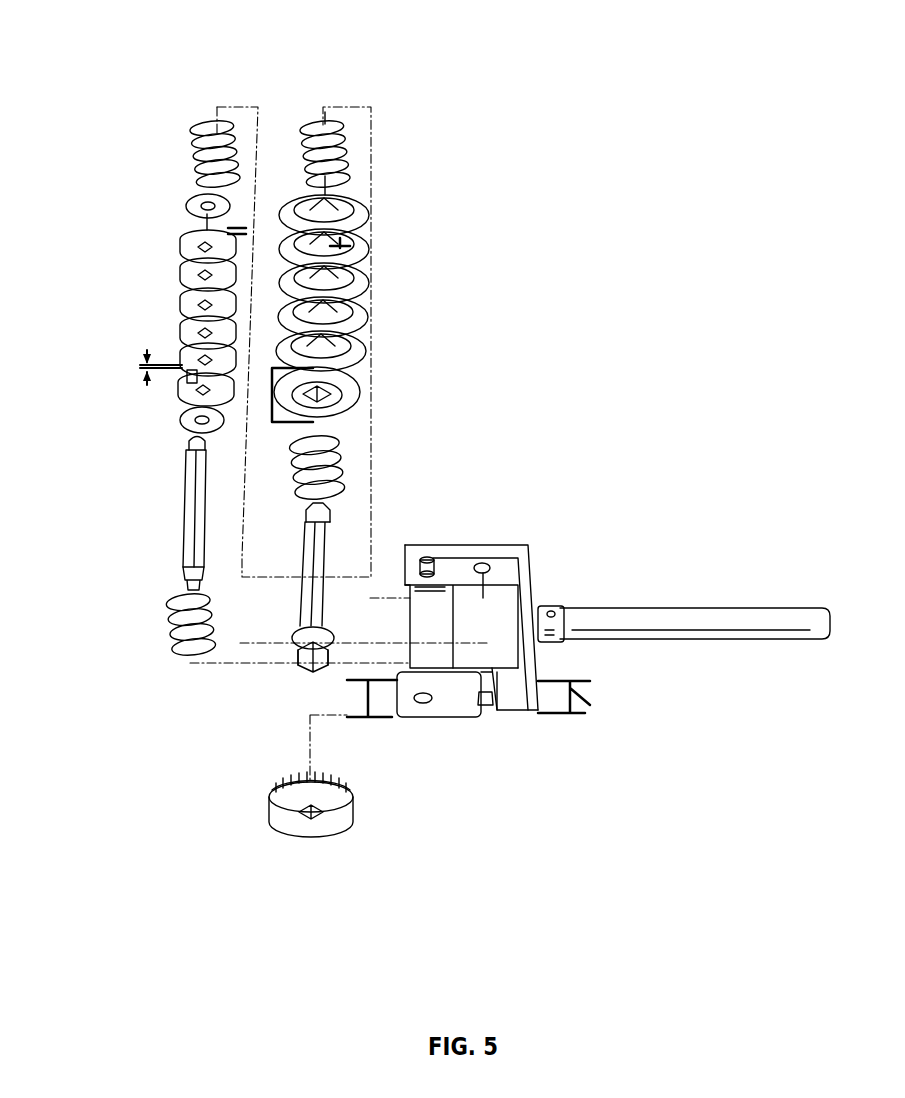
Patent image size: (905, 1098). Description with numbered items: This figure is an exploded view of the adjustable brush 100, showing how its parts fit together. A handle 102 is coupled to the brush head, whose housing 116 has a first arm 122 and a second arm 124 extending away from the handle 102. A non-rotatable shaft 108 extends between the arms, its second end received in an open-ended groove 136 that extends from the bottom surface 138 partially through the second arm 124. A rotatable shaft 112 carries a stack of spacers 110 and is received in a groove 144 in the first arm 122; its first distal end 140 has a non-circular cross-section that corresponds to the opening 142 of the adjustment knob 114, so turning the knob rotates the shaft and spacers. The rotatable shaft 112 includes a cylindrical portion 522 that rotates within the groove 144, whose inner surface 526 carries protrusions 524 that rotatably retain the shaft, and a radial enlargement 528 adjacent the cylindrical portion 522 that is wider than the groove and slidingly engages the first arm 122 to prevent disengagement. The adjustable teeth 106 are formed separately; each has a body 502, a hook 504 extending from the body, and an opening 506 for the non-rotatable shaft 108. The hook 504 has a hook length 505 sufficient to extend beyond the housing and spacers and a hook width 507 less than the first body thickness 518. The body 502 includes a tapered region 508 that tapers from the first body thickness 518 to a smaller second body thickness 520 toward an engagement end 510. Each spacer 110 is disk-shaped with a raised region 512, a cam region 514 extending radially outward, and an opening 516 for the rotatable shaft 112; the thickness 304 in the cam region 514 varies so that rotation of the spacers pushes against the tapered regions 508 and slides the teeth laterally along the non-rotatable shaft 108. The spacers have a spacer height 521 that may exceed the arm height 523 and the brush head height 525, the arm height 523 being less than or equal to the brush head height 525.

The adjustable brush 100 is at (703, 60).
The handle 102 is at (697, 607).
The adjustable teeth 106 is at (158, 172).
The non-rotatable shaft 108 is at (195, 500).
The spacers 110 is at (388, 185).
The rotatable shaft 112 is at (325, 568).
The adjustment knob 114 is at (278, 797).
The housing 116 is at (532, 518).
The first arm 122 is at (460, 712).
The second arm 124 is at (457, 546).
The groove 136 is at (427, 560).
The bottom surface 138 is at (533, 598).
The first distal end 140 is at (291, 678).
The opening 142 is at (297, 822).
The groove 144 is at (497, 675).
The thickness 304 is at (328, 246).
The body 502 is at (182, 326).
The hook 504 is at (195, 314).
The hook length 505 is at (197, 383).
The opening 506 is at (200, 340).
The hook width 507 is at (147, 376).
The tapered region 508 is at (208, 252).
The engagement end 510 is at (228, 272).
The raised region 512 is at (337, 398).
The cam region 514 is at (337, 415).
The opening 516 is at (323, 392).
The first body thickness 518 is at (207, 215).
The second body thickness 520 is at (236, 232).
The spacer height 521 is at (268, 421).
The cylindrical portion 522 is at (302, 637).
The arm height 523 is at (573, 690).
The protrusions 524 is at (500, 677).
The brush head height 525 is at (367, 697).
The inner surface 526 is at (483, 714).
The radial enlargement 528 is at (302, 636).